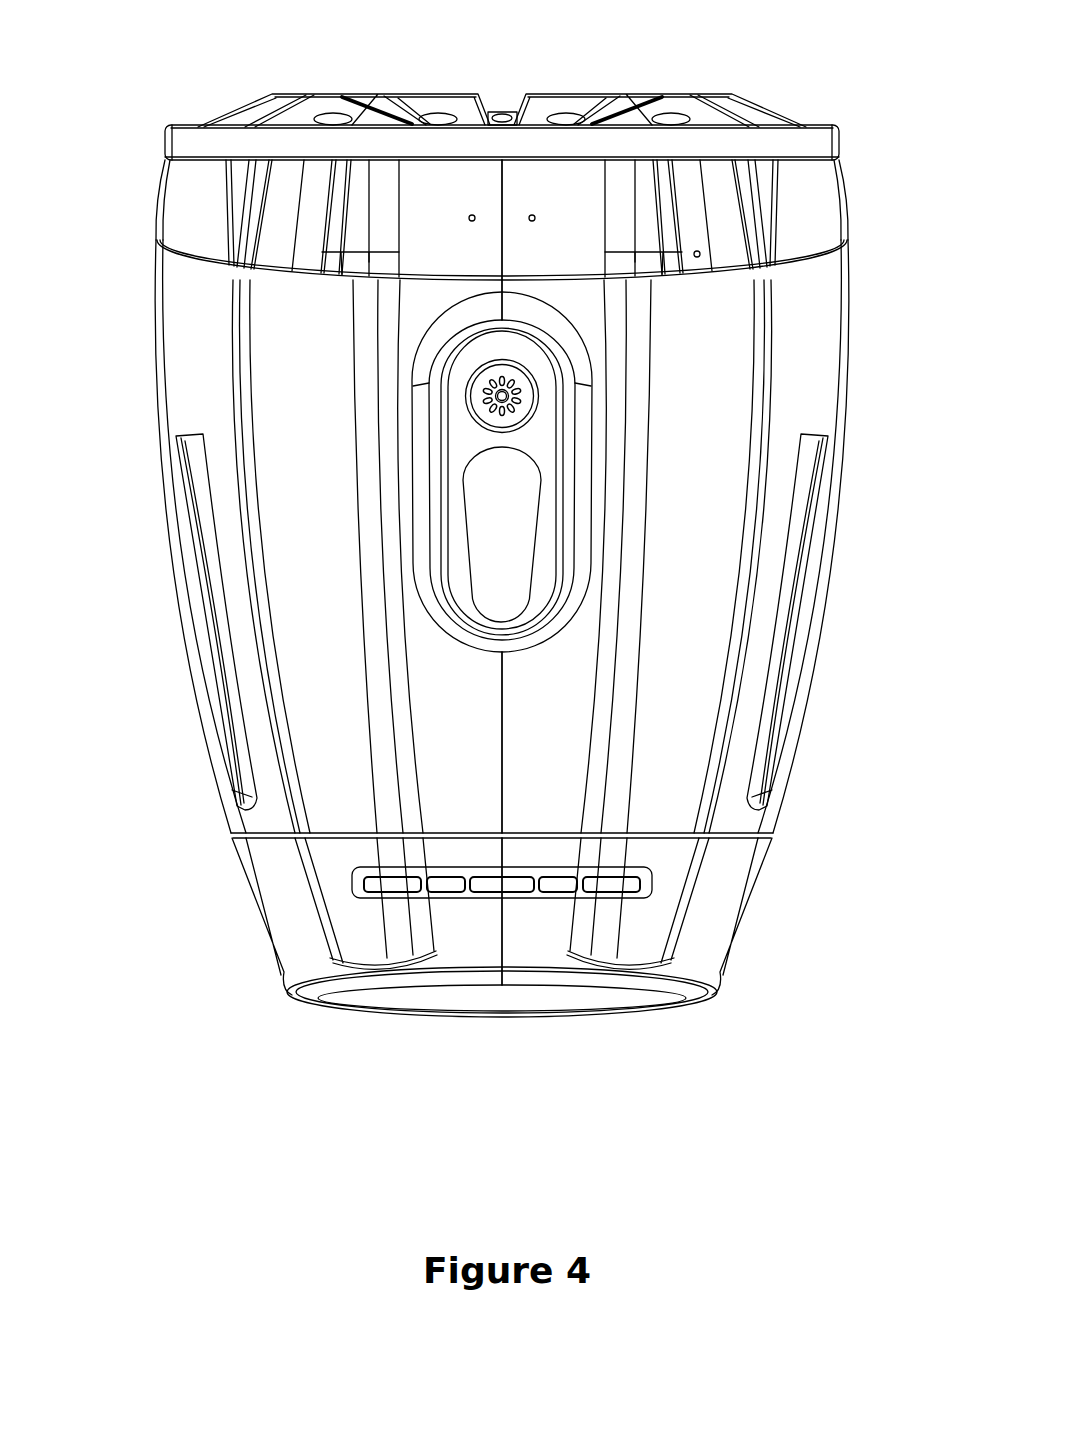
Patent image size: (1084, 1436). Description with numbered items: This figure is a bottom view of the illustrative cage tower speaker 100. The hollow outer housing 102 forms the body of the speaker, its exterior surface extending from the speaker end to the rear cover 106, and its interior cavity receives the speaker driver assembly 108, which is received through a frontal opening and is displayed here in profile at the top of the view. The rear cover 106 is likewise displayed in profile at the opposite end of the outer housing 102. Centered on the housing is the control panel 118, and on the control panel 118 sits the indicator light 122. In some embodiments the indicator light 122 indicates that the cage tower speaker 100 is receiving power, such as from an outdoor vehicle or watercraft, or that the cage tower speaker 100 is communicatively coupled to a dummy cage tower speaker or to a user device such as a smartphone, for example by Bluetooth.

The cage tower speaker 100 is at (112, 92).
The outer housing 102 is at (812, 395).
The rear cover 106 is at (713, 907).
The speaker driver assembly 108 is at (738, 117).
The control panel 118 is at (547, 382).
The indicator light 122 is at (490, 388).